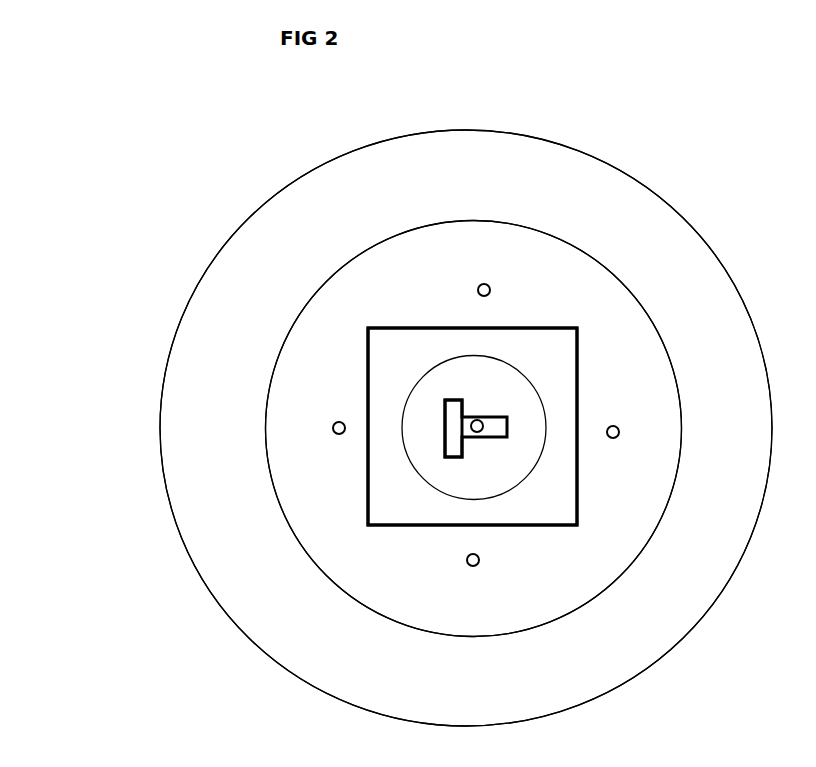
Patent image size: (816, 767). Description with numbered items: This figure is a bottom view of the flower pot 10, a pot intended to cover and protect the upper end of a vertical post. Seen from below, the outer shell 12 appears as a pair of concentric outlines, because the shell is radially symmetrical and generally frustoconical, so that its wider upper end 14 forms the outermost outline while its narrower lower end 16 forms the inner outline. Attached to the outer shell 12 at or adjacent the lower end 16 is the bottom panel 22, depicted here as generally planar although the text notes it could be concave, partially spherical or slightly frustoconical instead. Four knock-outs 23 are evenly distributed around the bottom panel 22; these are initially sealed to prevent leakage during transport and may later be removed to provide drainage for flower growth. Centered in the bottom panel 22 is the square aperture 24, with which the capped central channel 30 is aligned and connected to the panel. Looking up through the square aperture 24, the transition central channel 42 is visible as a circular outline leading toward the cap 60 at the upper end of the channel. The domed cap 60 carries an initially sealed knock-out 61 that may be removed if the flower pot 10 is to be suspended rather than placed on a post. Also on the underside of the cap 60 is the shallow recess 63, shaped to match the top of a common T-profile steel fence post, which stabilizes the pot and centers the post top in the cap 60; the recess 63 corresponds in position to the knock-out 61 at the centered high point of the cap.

The flower pot 10 is at (213, 215).
The outer shell 12 is at (459, 198).
The upper end 14 is at (515, 137).
The lower end 16 is at (317, 283).
The bottom panel 22 is at (469, 270).
The knock-out 23 is at (478, 293).
The square aperture 24 is at (499, 327).
The capped central channel 30 is at (392, 381).
The transition central channel 42 is at (550, 385).
The cap 60 is at (509, 476).
The knock-out 61 is at (481, 421).
The recess 63 is at (450, 458).